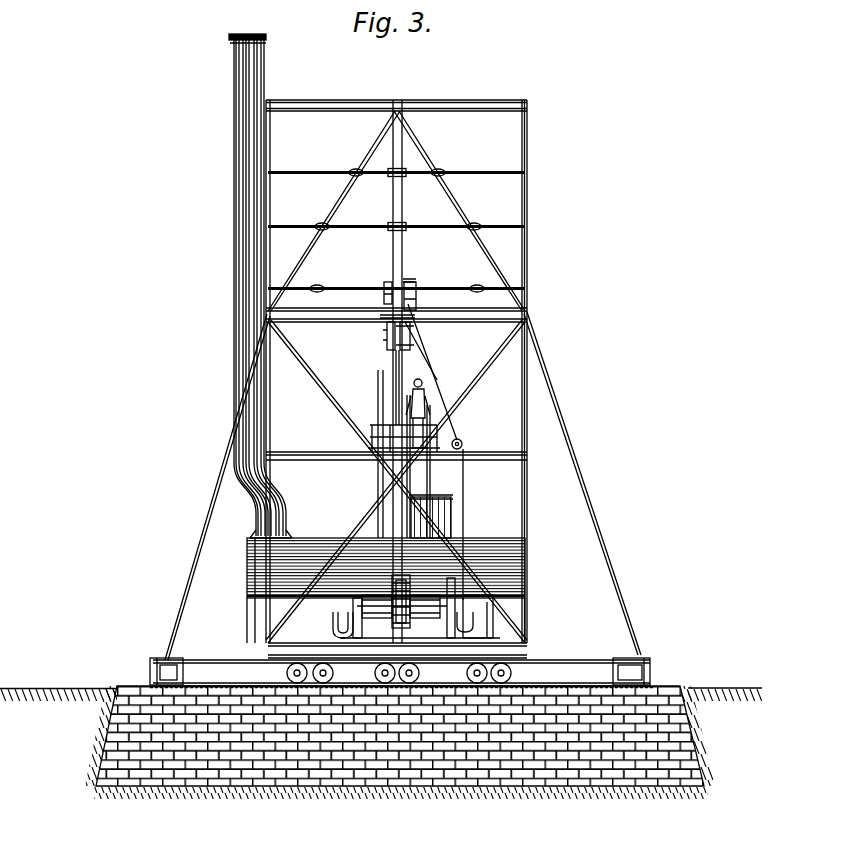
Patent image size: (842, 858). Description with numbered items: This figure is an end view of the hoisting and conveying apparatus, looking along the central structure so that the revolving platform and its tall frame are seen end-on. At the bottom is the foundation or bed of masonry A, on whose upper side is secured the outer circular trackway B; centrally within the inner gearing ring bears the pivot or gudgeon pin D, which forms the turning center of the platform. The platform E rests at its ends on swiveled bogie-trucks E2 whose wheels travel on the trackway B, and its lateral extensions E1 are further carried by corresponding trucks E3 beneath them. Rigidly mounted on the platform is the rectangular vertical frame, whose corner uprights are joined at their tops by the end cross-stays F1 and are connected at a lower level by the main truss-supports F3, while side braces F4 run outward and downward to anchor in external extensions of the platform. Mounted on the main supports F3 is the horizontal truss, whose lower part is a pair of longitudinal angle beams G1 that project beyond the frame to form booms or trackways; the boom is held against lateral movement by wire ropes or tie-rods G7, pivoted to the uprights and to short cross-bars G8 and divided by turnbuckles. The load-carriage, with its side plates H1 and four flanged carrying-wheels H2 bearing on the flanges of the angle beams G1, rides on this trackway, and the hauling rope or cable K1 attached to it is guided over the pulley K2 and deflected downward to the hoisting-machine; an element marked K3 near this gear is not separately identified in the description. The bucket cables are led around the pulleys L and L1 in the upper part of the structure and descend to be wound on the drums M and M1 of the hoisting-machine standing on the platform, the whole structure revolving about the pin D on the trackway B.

The end cross-stays F1 is at (470, 96).
The main truss-supports F3 is at (528, 318).
The side braces F4 is at (587, 493).
The wire ropes or tie-rods G7 is at (309, 171).
The short cross-bars G8 is at (402, 170).
The flanged carrying-wheels H2 is at (398, 303).
The pulley K2 is at (405, 282).
The hauling rope or cable K1 is at (416, 301).
The side plates H1 is at (391, 323).
The drum K3 is at (427, 337).
The angle beams G1 is at (382, 319).
The pulley L1 is at (393, 344).
The pulley L is at (419, 347).
The drum M is at (464, 537).
The drum M1 is at (373, 594).
The pivot or gudgeon pin D is at (581, 611).
The bogie-trucks E2 is at (368, 653).
The platform E is at (517, 650).
The lateral extensions E1 is at (210, 660).
The trucks E3 is at (168, 660).
The outer circular trackway B is at (152, 685).
The foundation or bed of masonry A is at (380, 784).